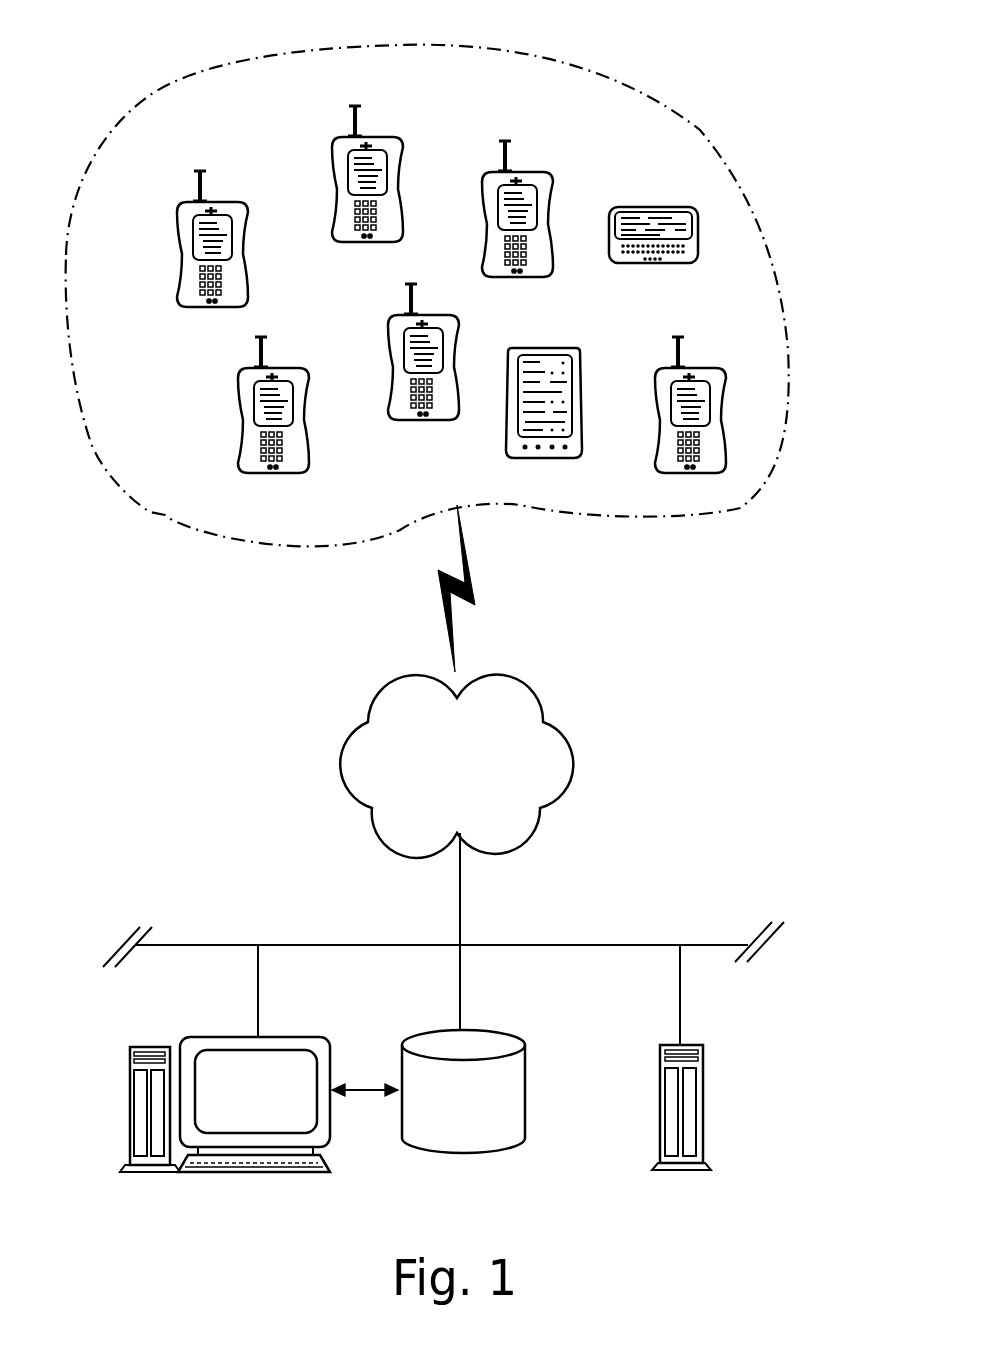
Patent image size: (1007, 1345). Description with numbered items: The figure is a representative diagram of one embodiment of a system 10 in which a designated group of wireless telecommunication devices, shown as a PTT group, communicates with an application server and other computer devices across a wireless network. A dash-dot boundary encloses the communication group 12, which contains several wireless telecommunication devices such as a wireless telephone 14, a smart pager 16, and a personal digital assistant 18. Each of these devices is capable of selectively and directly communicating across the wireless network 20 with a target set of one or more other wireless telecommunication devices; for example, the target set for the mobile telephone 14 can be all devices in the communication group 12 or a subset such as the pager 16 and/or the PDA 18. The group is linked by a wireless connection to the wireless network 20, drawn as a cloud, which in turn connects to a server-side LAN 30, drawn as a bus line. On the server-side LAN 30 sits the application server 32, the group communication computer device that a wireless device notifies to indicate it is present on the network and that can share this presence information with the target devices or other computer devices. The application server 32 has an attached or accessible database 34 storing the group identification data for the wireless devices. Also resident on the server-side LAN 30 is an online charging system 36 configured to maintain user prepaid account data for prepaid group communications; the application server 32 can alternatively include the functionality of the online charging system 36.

The system 10 is at (718, 62).
The communication group 12 is at (138, 532).
The wireless telephone 14 is at (398, 137).
The smart pager 16 is at (661, 264).
The personal digital assistant 18 is at (508, 421).
The wireless network 20 is at (572, 765).
The server-side LAN 30 is at (220, 945).
The application server 32 is at (228, 1035).
The database 34 is at (525, 1090).
The online charging system 36 is at (703, 1103).